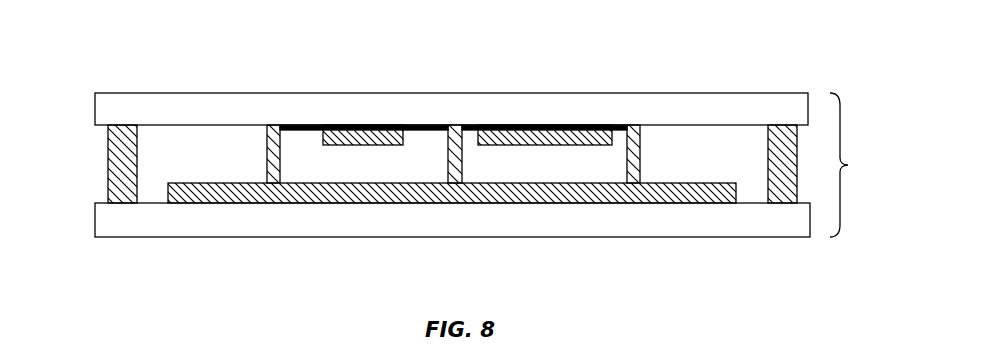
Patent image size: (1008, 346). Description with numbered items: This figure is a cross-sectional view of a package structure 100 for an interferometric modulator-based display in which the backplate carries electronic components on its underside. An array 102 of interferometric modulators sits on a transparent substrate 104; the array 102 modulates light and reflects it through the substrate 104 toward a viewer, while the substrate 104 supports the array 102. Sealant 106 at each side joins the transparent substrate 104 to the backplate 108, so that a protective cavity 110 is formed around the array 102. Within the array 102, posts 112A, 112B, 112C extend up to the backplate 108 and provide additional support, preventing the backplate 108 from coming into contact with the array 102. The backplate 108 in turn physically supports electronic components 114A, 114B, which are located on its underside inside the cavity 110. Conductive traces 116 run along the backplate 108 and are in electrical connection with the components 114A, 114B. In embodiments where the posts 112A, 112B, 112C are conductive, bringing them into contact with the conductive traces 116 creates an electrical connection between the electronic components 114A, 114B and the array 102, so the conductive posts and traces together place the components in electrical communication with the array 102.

The package structure 100 is at (862, 165).
The array of interferometric modulators 102 is at (385, 195).
The transparent substrate 104 is at (250, 222).
The sealant 106 is at (115, 156).
The backplate 108 is at (782, 102).
The protective cavity 110 is at (687, 168).
The post 112A is at (263, 143).
The post 112B is at (447, 143).
The post 112C is at (640, 142).
The electronic component 114A is at (368, 130).
The electronic component 114B is at (552, 128).
The conductive traces 116 is at (417, 130).